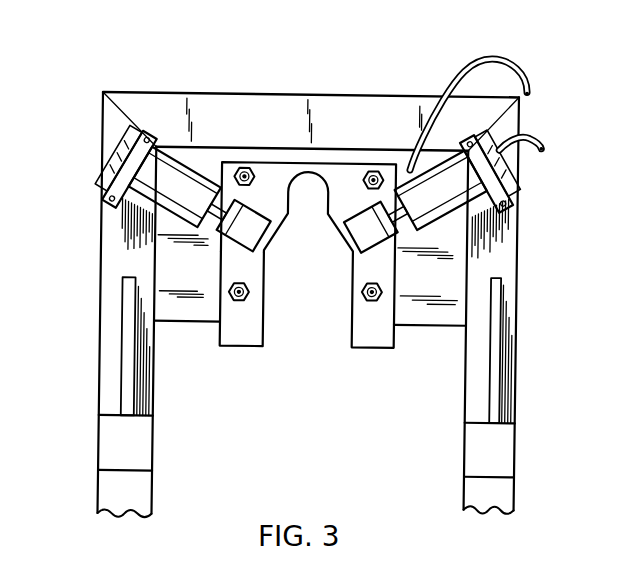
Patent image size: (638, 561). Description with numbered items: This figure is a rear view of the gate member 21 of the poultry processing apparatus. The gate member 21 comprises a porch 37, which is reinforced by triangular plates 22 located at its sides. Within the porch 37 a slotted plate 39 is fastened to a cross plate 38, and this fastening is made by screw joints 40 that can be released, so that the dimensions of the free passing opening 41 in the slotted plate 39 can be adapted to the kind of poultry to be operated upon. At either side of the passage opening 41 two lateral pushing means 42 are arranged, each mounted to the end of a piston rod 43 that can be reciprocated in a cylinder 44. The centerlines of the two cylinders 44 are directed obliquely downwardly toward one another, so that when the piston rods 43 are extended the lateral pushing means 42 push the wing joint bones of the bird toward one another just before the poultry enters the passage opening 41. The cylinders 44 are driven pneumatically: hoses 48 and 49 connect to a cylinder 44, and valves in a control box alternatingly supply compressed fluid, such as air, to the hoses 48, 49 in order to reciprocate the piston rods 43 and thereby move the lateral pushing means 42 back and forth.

The gate member 21 is at (283, 87).
The triangular plates 22 is at (132, 390).
The porch 37 is at (375, 103).
The cross plate 38 is at (190, 307).
The slotted plate 39 is at (248, 331).
The screw joints 40 is at (371, 290).
The free passing opening 41 is at (316, 300).
The lateral pushing means 42 is at (366, 220).
The piston rod 43 is at (406, 210).
The cylinder 44 is at (156, 180).
The hose 48 is at (545, 117).
The hose 49 is at (522, 66).